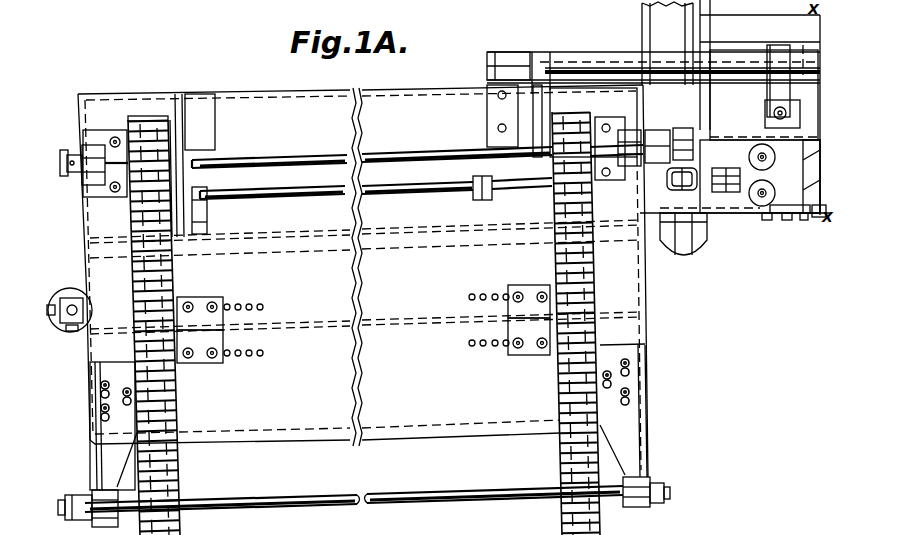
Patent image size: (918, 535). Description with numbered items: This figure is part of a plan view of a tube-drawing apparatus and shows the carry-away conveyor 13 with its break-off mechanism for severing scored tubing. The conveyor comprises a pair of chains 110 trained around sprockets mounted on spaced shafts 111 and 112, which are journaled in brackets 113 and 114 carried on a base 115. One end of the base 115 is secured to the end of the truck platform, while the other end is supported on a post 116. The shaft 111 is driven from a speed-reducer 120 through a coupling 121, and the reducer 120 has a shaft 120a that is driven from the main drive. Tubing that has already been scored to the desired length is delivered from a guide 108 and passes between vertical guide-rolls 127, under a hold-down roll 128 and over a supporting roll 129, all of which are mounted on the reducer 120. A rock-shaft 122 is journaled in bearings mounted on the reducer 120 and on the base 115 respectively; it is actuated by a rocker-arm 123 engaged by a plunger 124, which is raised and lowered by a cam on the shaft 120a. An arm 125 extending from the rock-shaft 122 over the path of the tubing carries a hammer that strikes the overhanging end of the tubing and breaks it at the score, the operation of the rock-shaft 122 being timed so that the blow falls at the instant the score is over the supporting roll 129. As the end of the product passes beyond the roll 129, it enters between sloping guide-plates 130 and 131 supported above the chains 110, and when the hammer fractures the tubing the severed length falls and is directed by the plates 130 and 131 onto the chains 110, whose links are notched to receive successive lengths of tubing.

The carry-away conveyor 13 is at (635, 302).
The guide 108 is at (795, 226).
The chains 110 is at (175, 468).
The shaft 111 is at (273, 160).
The shaft 112 is at (303, 502).
The bracket 113 is at (97, 136).
The bracket 114 is at (636, 508).
The base 115 is at (361, 287).
The post 116 is at (74, 298).
The speed-reducer 120 is at (783, 227).
The shaft 120a is at (783, 230).
The coupling 121 is at (686, 130).
The rock-shaft 122 is at (589, 67).
The rocker-arm 123 is at (773, 89).
The plunger 124 is at (772, 113).
The arm 125 is at (546, 101).
The vertical guide-rolls 127 is at (778, 198).
The hold-down roll 128 is at (723, 193).
The supporting roll 129 is at (700, 186).
The guide-plate 130 is at (472, 204).
The guide-plate 131 is at (208, 213).